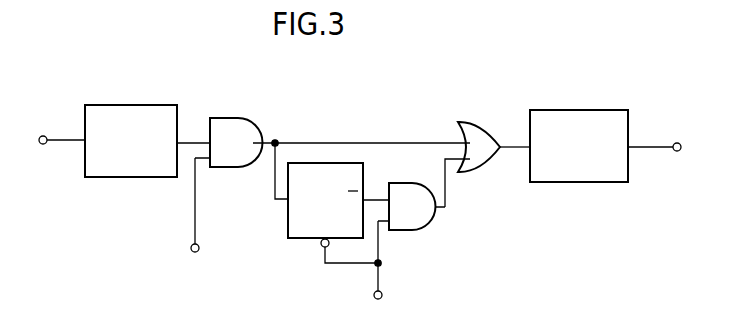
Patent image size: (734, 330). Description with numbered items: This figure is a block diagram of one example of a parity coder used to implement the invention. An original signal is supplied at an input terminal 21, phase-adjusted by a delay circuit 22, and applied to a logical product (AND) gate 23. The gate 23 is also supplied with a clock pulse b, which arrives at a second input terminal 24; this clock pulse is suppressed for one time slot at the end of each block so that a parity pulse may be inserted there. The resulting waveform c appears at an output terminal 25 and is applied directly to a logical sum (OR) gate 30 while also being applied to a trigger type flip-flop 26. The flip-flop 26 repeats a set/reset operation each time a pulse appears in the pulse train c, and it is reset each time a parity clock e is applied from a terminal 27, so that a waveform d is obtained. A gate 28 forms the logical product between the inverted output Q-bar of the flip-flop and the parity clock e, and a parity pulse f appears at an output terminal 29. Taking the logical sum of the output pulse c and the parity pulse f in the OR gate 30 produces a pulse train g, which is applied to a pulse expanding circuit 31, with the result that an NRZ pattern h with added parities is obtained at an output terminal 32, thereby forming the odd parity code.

The input terminal 21 is at (43, 136).
The delay circuit 22 is at (126, 105).
The logical product (AND) gate 23 is at (230, 118).
The input terminal b 24 is at (192, 251).
The output terminal 25 is at (275, 140).
The trigger type flip-flop 26 is at (298, 238).
The terminal 27 is at (374, 297).
The gate 28 is at (422, 230).
The output terminal 29 is at (449, 211).
The logical sum (OR) gate 30 is at (478, 122).
The pulse expanding circuit 31 is at (575, 110).
The output terminal 32 is at (678, 143).